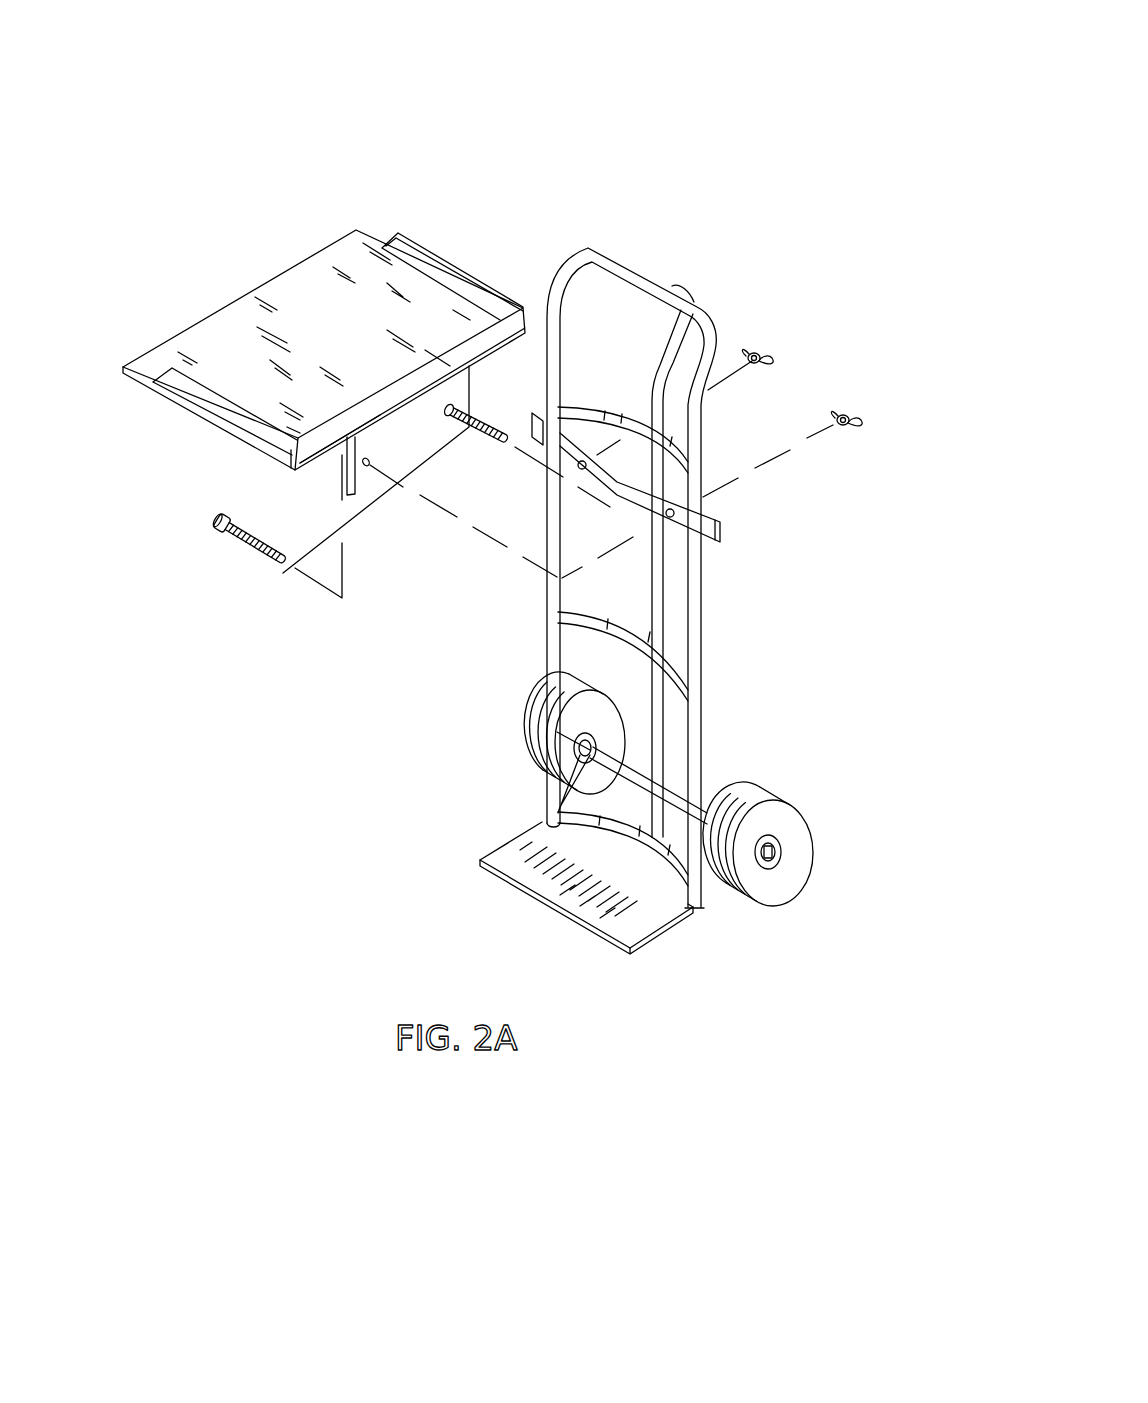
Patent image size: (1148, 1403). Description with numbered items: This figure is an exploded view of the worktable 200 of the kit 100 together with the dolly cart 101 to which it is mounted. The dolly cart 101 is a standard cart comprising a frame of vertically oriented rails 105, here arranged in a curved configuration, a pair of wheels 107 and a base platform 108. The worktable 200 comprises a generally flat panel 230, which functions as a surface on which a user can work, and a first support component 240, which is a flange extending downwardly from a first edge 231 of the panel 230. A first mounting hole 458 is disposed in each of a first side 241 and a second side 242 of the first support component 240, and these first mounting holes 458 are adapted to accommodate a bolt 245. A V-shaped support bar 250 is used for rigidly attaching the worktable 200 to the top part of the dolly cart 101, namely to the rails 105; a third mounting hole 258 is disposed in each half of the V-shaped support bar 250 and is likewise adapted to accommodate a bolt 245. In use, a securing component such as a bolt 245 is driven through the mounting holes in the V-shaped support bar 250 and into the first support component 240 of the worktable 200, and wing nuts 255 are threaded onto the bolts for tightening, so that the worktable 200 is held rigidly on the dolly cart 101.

The kit 100 is at (765, 1066).
The dolly cart 101 is at (547, 631).
The rails 105 is at (663, 690).
The wheels 107 is at (525, 740).
The base platform 108 is at (525, 890).
The worktable 200 is at (413, 165).
The panel 230 is at (345, 237).
The first edge 231 is at (433, 385).
The first support component 240 is at (372, 494).
The first side 241 is at (380, 437).
The second side 242 is at (453, 393).
The bolt 245 is at (215, 528).
The V-shaped support bar 250 is at (710, 538).
The wing nut 255 is at (846, 424).
The third mounting hole 258 is at (660, 512).
The first mounting hole 458 is at (360, 463).